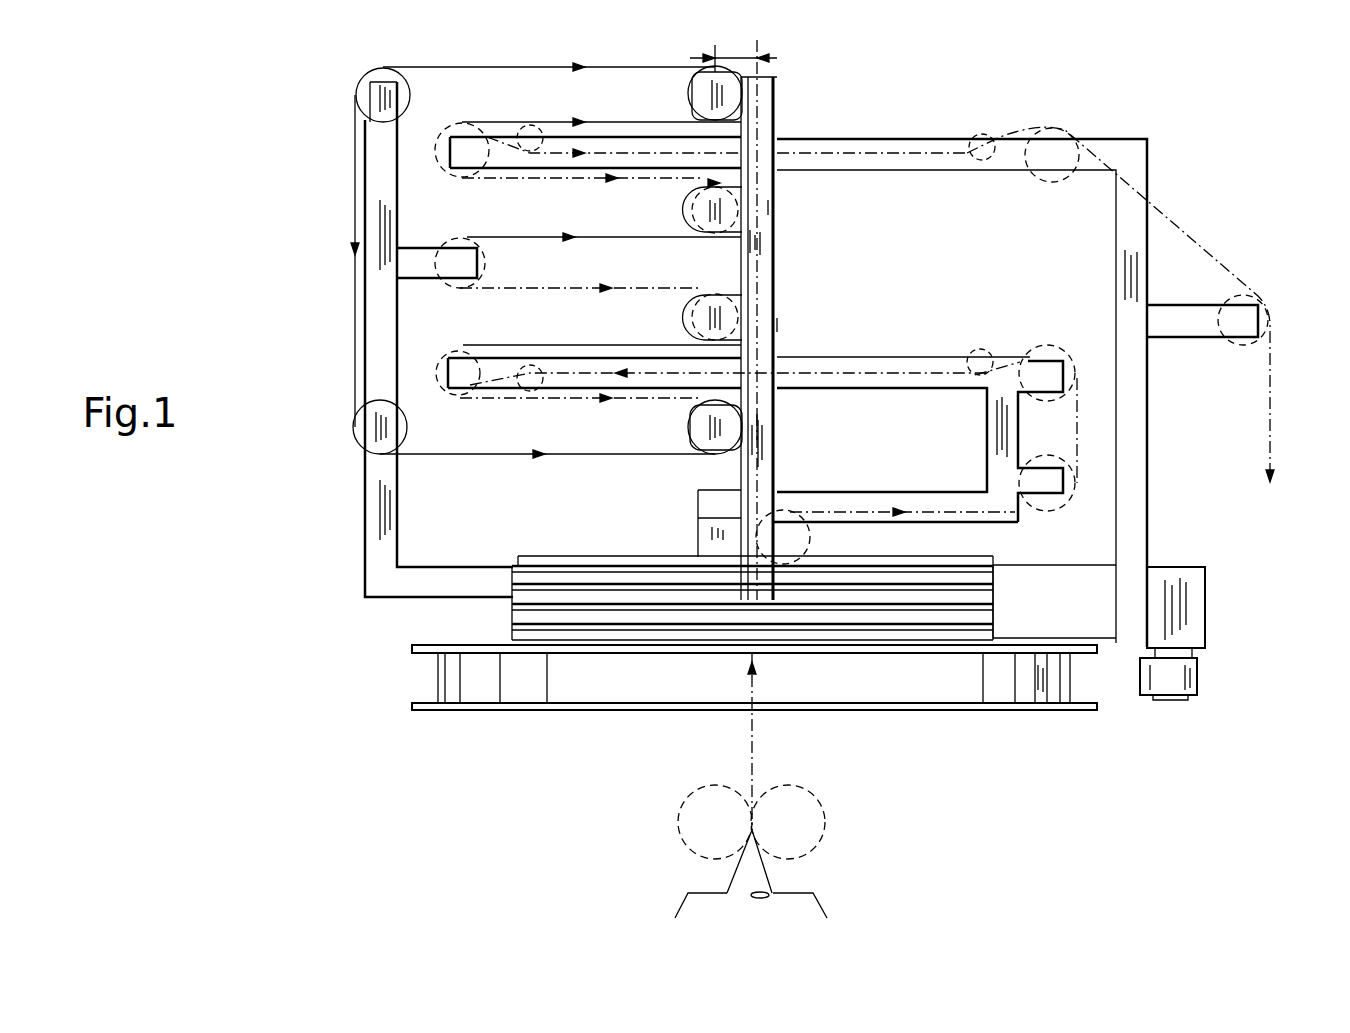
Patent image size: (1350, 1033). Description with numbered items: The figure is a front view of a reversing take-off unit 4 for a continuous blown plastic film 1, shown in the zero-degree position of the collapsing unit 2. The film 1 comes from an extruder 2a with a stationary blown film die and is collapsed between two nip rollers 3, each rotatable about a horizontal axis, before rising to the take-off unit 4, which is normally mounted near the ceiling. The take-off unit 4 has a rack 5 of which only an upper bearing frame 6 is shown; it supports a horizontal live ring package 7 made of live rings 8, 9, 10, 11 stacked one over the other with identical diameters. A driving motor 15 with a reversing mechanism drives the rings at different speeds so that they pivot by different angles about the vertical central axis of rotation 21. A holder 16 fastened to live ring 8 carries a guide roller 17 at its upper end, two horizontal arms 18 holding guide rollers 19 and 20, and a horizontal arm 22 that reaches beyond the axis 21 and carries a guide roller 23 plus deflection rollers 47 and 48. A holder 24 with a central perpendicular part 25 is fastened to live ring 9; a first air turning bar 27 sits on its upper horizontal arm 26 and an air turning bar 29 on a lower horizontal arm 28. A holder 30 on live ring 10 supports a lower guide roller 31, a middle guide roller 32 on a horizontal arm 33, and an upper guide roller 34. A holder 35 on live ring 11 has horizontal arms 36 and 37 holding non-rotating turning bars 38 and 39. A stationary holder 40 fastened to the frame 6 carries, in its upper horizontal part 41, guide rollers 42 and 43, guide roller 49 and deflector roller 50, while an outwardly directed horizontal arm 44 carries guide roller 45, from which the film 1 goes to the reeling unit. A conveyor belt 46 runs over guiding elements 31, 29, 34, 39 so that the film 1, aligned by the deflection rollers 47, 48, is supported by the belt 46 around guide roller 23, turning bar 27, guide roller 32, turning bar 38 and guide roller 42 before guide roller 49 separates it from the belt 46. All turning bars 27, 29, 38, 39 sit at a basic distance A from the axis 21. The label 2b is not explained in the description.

The continuous blown plastic film 1 is at (1165, 215).
The collapsing unit 2 is at (680, 848).
The extruder 2a is at (680, 912).
The former nose 2b is at (727, 893).
The nip rollers 3 is at (683, 805).
The reversing take-off unit 4 is at (820, 130).
The rack 5 is at (990, 712).
The upper bearing frame 6 is at (473, 688).
The live ring package 7 is at (508, 633).
The live ring 8 is at (593, 617).
The live ring 9 is at (632, 560).
The live ring 10 is at (563, 575).
The live ring 11 is at (647, 595).
The driving motor 15 is at (1193, 615).
The holder 16 is at (905, 490).
The guide roller 17 is at (787, 525).
The horizontal arms 18 is at (1055, 377).
The guide roller 19 is at (1068, 492).
The guide roller 20 is at (1068, 365).
The vertical central axis of rotation 21 is at (758, 250).
The horizontal arm 22 is at (558, 368).
The guide roller 23 is at (458, 378).
The holder 24 is at (777, 325).
The central perpendicular part 25 is at (762, 425).
The upper horizontal arm 26 is at (720, 318).
The first air turning bar 27 is at (693, 322).
The horizontal arm 28 is at (715, 445).
The air turning bar 29 is at (690, 427).
The holder 30 is at (380, 355).
The lower guide roller 31 is at (354, 430).
The middle guide roller 32 is at (455, 275).
The horizontal arm 33 is at (415, 262).
The upper guide roller 34 is at (370, 72).
The holder 35 is at (770, 208).
The horizontal arm 36 is at (702, 222).
The horizontal arm 37 is at (748, 82).
The turning bar 38 is at (690, 205).
The turning bar 39 is at (693, 95).
The holder 40 is at (1148, 492).
The upper horizontal part 41 is at (932, 160).
The guide roller 42 is at (443, 133).
The guide roller 43 is at (1062, 140).
The outwardly directed horizontal arm 44 is at (1187, 300).
The guide roller 45 is at (1262, 330).
The conveyor belt 46 is at (355, 205).
The deflection roller 47 is at (982, 350).
The deflection roller 48 is at (532, 390).
The guide roller 49 is at (535, 133).
The deflector roller 50 is at (985, 135).